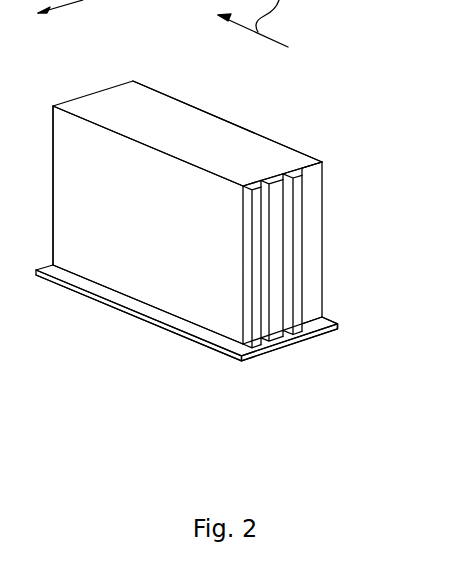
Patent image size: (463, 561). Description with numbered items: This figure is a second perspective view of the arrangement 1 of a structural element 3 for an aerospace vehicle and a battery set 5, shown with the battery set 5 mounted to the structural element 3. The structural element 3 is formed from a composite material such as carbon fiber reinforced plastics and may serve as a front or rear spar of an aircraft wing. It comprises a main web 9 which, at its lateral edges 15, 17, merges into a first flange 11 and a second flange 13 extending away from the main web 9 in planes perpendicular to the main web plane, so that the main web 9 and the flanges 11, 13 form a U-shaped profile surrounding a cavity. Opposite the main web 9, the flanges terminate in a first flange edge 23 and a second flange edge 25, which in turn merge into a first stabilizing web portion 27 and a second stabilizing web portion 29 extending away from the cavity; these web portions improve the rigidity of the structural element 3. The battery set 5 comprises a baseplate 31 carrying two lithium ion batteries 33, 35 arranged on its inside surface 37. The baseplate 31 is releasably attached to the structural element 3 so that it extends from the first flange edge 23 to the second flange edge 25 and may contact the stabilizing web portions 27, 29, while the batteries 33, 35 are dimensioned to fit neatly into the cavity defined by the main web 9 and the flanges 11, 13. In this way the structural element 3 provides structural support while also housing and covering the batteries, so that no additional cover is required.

The arrangement 1 is at (74, 316).
The structural element 3 is at (237, 115).
The battery set 5 is at (289, 358).
The main web 9 is at (265, 158).
The first flange 11 is at (70, 188).
The second flange 13 is at (323, 237).
The lateral edge 15 is at (65, 104).
The lateral edge 17 is at (167, 97).
The first flange edge 23 is at (225, 357).
The second flange edge 25 is at (318, 318).
The first stabilizing web portion 27 is at (145, 312).
The second stabilizing web portion 29 is at (330, 313).
The baseplate 31 is at (272, 353).
The battery 33 is at (188, 338).
The battery 35 is at (300, 213).
The inside surface 37 is at (295, 328).